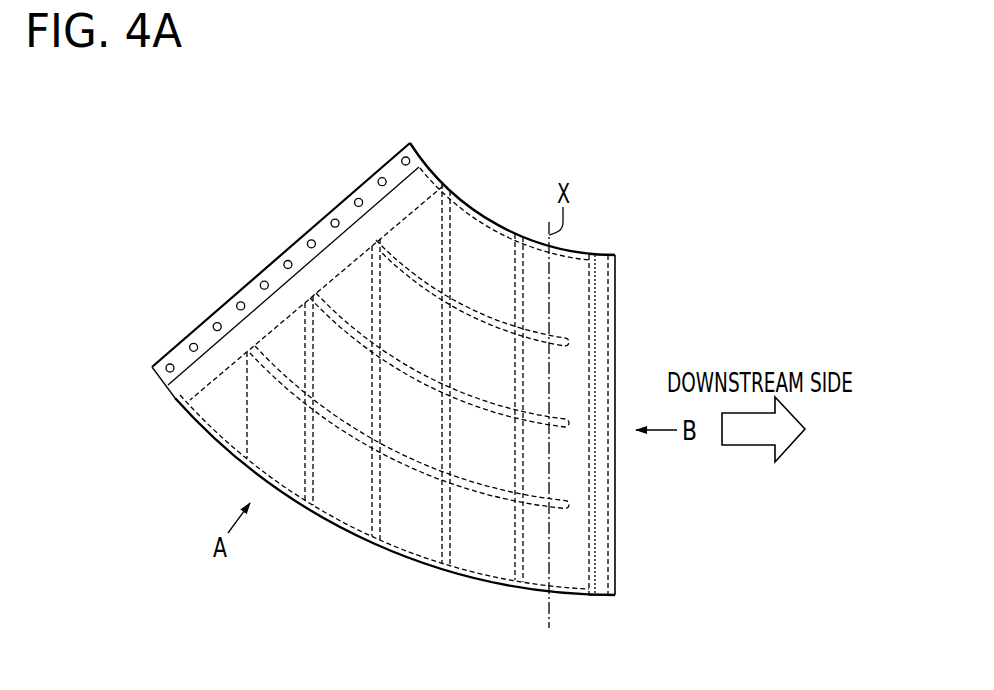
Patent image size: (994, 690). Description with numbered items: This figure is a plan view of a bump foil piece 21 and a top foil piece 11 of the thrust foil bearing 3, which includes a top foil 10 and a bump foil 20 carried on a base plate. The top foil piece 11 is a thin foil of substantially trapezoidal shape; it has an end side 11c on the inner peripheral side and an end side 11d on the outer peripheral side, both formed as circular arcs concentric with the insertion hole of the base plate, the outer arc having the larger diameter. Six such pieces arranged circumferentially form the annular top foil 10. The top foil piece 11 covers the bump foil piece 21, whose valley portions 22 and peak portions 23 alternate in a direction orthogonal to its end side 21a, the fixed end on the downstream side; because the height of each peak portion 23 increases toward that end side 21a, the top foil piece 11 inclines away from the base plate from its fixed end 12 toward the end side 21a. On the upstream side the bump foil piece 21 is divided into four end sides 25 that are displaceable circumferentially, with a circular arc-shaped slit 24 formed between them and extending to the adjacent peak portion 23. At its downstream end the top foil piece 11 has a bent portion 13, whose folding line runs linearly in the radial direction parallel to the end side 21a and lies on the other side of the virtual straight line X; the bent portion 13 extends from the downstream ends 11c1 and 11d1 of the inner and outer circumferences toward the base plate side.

The thrust foil bearing 3 is at (206, 143).
The top foil 10 is at (324, 530).
The top foil piece 11 is at (318, 492).
The end side on the inner peripheral side 11c is at (490, 217).
The downstream end of the inner circumference 11c1 is at (605, 250).
The end side on the outer peripheral side 11d is at (360, 543).
The downstream end of the outer circumference 11d1 is at (607, 603).
The fixed end 12 is at (297, 248).
The bent portion 13 is at (615, 376).
The bump foil 20 is at (339, 527).
The bump foil piece 21 is at (400, 458).
The end side 21a is at (615, 478).
The valley portion 22 is at (543, 565).
The peak portion 23 is at (462, 537).
The slit 24 is at (423, 378).
The end side 25 is at (220, 398).